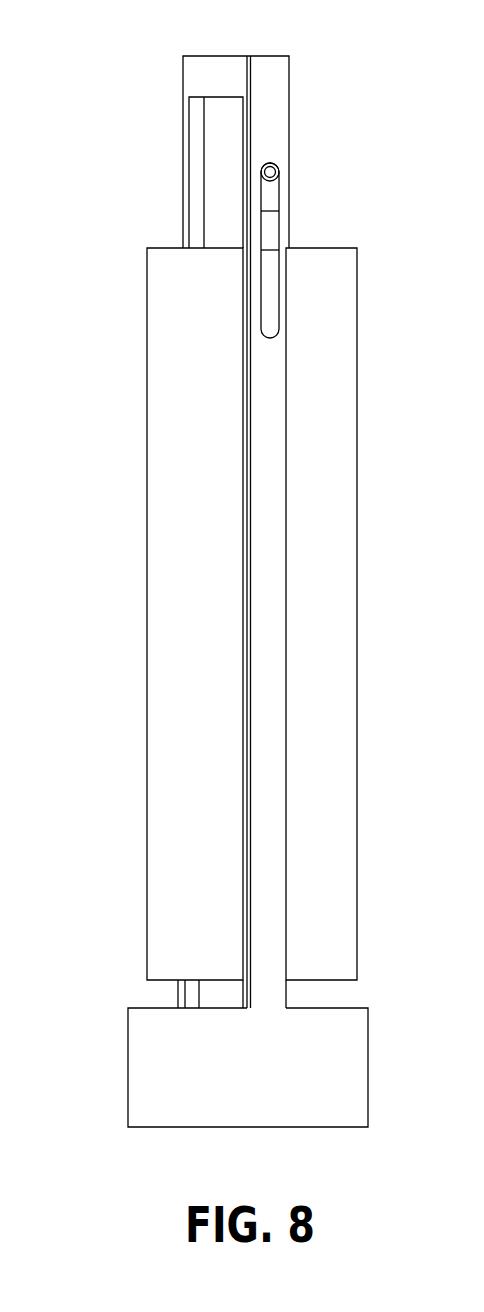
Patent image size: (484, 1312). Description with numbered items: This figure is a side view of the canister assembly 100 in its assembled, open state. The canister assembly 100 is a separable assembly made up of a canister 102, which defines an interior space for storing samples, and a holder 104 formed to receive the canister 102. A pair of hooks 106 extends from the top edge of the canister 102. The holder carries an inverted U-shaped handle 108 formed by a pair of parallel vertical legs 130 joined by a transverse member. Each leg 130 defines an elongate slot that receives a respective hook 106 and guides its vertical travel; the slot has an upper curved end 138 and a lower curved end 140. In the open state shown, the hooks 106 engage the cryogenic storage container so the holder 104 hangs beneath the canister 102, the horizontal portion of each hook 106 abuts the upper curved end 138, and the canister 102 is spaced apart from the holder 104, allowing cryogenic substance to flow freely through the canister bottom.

The canister assembly 100 is at (126, 102).
The canister 102 is at (202, 638).
The holder 104 is at (183, 1078).
The hooks 106 is at (277, 177).
The handle 108 is at (275, 44).
The legs 130 is at (257, 543).
The upper curved end 138 is at (278, 168).
The lower curved end 140 is at (271, 338).